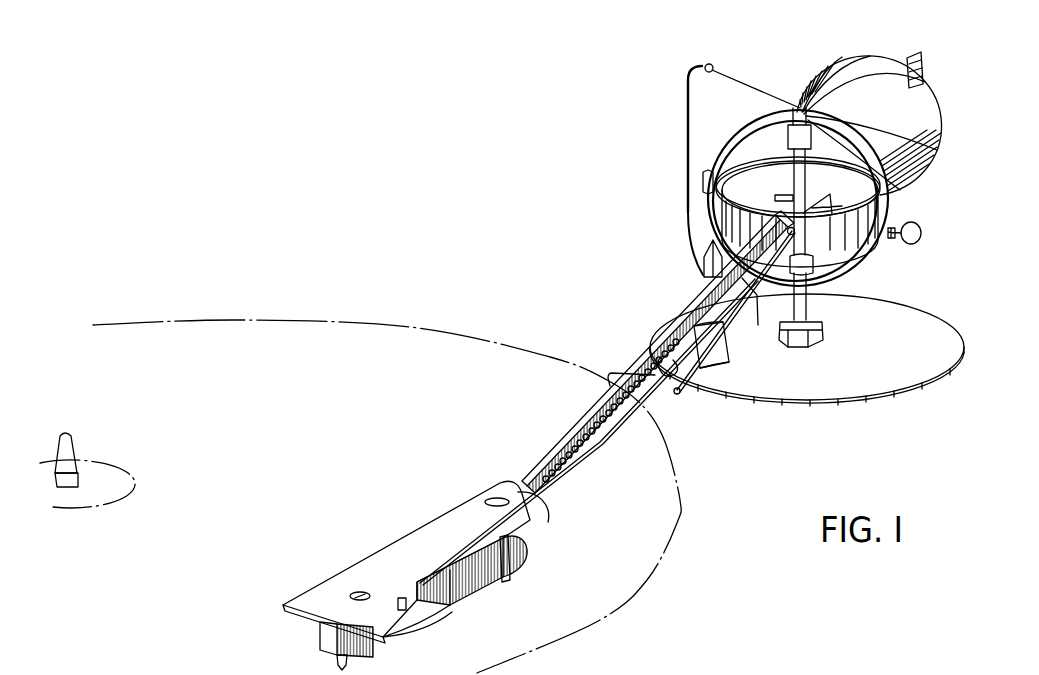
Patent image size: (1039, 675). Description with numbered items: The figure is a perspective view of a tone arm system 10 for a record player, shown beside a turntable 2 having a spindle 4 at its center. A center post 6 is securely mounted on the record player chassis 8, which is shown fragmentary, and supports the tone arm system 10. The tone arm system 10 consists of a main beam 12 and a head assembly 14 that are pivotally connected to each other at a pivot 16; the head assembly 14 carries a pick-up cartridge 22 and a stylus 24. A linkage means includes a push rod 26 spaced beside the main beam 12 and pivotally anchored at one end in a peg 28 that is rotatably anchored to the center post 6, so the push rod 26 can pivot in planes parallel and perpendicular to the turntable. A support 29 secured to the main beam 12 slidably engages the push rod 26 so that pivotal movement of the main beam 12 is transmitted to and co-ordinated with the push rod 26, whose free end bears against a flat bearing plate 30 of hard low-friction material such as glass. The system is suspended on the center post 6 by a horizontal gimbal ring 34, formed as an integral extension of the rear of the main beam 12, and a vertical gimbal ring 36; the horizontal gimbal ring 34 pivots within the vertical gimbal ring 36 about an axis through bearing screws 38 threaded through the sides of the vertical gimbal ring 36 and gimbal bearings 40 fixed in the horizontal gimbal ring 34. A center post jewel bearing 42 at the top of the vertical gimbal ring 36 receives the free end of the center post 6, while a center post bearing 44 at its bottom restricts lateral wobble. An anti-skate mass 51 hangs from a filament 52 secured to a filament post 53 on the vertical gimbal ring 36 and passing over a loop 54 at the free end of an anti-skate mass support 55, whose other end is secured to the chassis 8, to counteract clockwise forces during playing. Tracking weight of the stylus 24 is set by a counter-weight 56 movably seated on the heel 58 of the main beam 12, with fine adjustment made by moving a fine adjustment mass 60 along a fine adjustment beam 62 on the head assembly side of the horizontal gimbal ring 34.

The turntable 2 is at (363, 345).
The spindle 4 is at (66, 453).
The center post 6 is at (716, 160).
The record player chassis 8 is at (950, 343).
The tone arm system 10 is at (625, 324).
The main beam 12 is at (582, 415).
The head assembly 14 is at (431, 540).
The pivot 16 is at (507, 498).
The pick-up cartridge 22 is at (320, 640).
The stylus 24 is at (346, 661).
The push rod 26 is at (613, 430).
The peg 28 is at (878, 203).
The support 29 is at (580, 462).
The bearing plate 30 is at (511, 578).
The horizontal gimbal ring 34 is at (745, 226).
The vertical gimbal ring 36 is at (887, 207).
The bearing screws 38 is at (913, 240).
The gimbal bearings 40 is at (725, 198).
The center post jewel bearing 42 is at (853, 73).
The center post bearing 44 is at (832, 283).
The anti-skate mass 51 is at (706, 283).
The filament 52 is at (748, 83).
The filament post 53 is at (797, 103).
The loop 54 is at (708, 65).
The anti-skate mass support 55 is at (687, 245).
The counter-weight 56 is at (932, 128).
The heel 58 is at (920, 66).
The fine adjustment mass 60 is at (722, 370).
The fine adjustment beam 62 is at (758, 325).